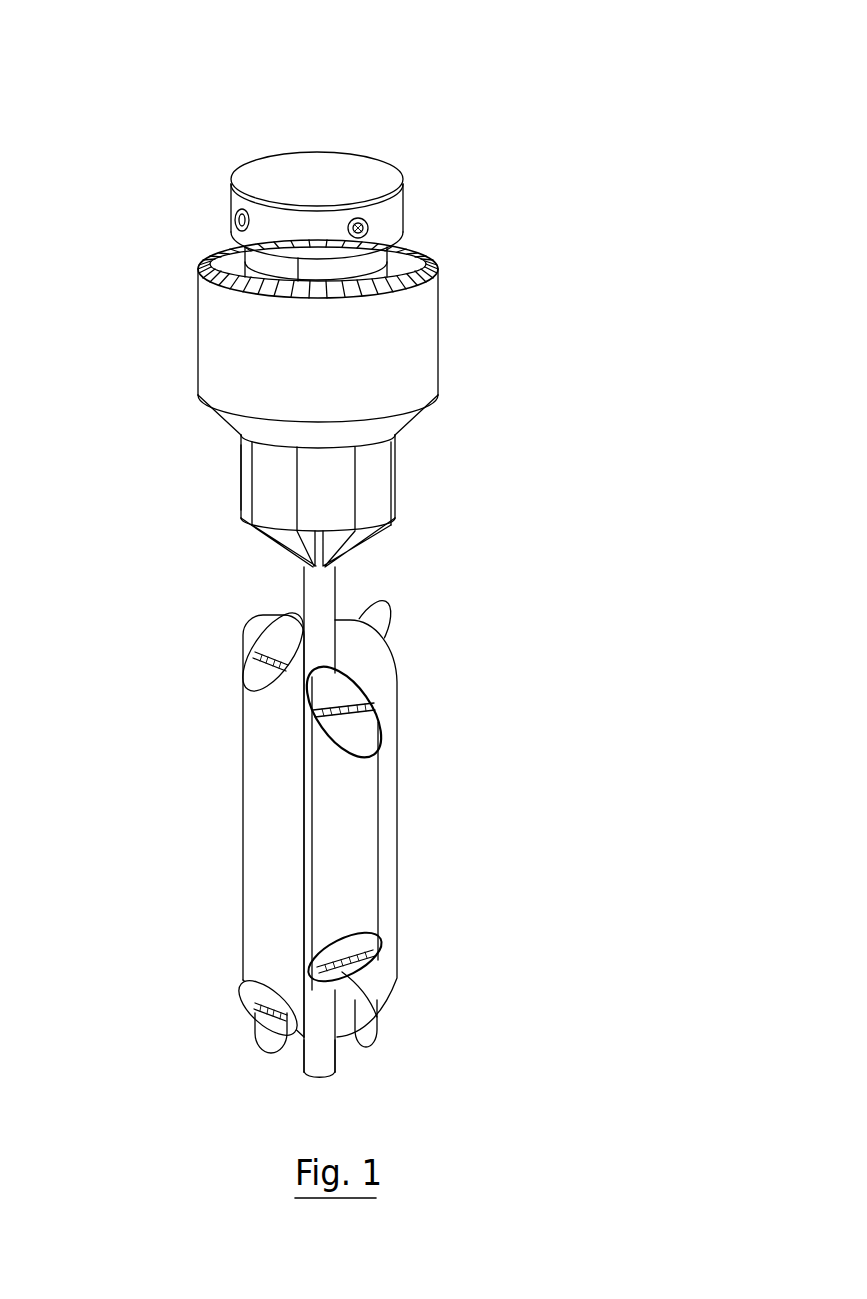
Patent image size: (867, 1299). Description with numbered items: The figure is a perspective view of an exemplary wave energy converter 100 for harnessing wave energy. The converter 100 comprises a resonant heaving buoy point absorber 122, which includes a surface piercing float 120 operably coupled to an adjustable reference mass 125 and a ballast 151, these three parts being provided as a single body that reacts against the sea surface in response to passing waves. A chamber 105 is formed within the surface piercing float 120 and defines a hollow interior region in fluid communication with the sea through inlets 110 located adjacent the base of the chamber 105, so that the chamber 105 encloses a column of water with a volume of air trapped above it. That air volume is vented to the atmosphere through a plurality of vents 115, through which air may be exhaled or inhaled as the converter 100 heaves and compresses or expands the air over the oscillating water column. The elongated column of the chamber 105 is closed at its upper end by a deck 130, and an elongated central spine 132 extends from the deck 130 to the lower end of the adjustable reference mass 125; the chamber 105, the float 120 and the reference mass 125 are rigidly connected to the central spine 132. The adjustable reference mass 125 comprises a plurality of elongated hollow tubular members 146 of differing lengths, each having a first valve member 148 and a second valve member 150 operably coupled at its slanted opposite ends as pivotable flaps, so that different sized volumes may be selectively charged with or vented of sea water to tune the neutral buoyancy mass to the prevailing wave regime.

The wave energy converter 100 is at (420, 80).
The vents 115 is at (236, 216).
The deck 130 is at (230, 267).
The surface piercing float 120 is at (413, 322).
The resonant heaving buoy point absorber 122 is at (248, 468).
The chamber 105 is at (365, 472).
The inlets 110 is at (283, 542).
The central spine 132 is at (323, 587).
The first valve member 148 is at (272, 638).
The adjustable reference mass 125 is at (353, 792).
The elongated hollow tubular members 146 is at (243, 830).
The second valve member 150 is at (270, 1030).
The ballast 151 is at (323, 1065).